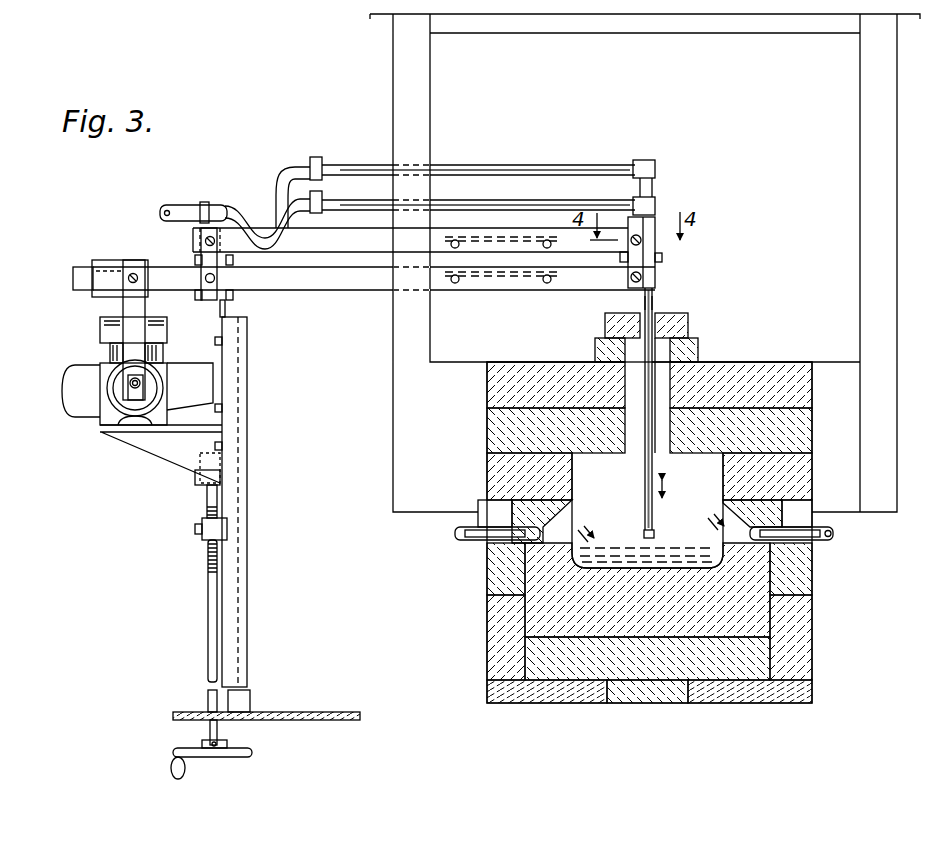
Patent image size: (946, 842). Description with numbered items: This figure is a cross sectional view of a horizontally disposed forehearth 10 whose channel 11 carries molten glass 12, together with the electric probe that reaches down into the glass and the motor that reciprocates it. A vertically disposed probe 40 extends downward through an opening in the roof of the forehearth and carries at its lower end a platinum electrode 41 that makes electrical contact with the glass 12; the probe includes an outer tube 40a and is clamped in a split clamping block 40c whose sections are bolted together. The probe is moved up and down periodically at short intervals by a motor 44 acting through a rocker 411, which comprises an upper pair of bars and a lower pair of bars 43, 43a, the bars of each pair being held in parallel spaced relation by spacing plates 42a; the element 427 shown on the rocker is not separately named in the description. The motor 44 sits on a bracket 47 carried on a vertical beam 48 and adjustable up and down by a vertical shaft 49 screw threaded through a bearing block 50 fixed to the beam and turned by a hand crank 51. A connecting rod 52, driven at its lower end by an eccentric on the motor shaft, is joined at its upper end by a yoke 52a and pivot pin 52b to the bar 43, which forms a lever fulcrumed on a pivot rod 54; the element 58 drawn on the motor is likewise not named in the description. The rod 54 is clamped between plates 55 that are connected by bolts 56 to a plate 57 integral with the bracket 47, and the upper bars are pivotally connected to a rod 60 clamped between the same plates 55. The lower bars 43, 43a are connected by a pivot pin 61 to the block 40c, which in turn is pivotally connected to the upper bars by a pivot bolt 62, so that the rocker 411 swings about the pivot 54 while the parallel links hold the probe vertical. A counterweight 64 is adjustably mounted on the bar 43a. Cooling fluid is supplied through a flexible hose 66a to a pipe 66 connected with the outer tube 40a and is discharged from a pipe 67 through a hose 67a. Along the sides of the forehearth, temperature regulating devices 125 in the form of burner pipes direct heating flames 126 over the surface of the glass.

The forehearth 10 is at (820, 562).
The channel 11 is at (700, 496).
The molten glass 12 is at (608, 556).
The probe 40 is at (660, 296).
The outer tube 40a is at (656, 302).
The split clamping block 40c is at (656, 222).
The platinum electrode 41 is at (710, 524).
The spacing plates 42a is at (520, 276).
The lower bar 43 is at (313, 283).
The lower bar 43a is at (80, 278).
The motor 44 is at (121, 393).
The bracket 47 is at (147, 438).
The vertical beam 48 is at (238, 418).
The vertical shaft 49 is at (210, 622).
The bearing block 50 is at (203, 537).
The hand crank 51 is at (175, 764).
The connecting rod 52 is at (130, 348).
The yoke 52a is at (130, 306).
The pivot pin 52b is at (128, 281).
The pivot rod 54 is at (215, 279).
The plates 55 is at (198, 259).
The bolts 56 is at (198, 294).
The plate 57 is at (221, 306).
The pulley 58 is at (126, 388).
The rod 60 is at (205, 242).
The pivot pin 61 is at (641, 277).
The pivot bolt 62 is at (641, 240).
The counterweight 64 is at (124, 246).
The pipe 66 is at (535, 192).
The flexible hose 66a is at (280, 214).
The pipe 67 is at (568, 158).
The hose 67a is at (290, 182).
The temperature regulating devices 125 is at (470, 532).
The heating flames 126 is at (735, 520).
The rocker 411 is at (356, 292).
The slide 427 is at (362, 222).